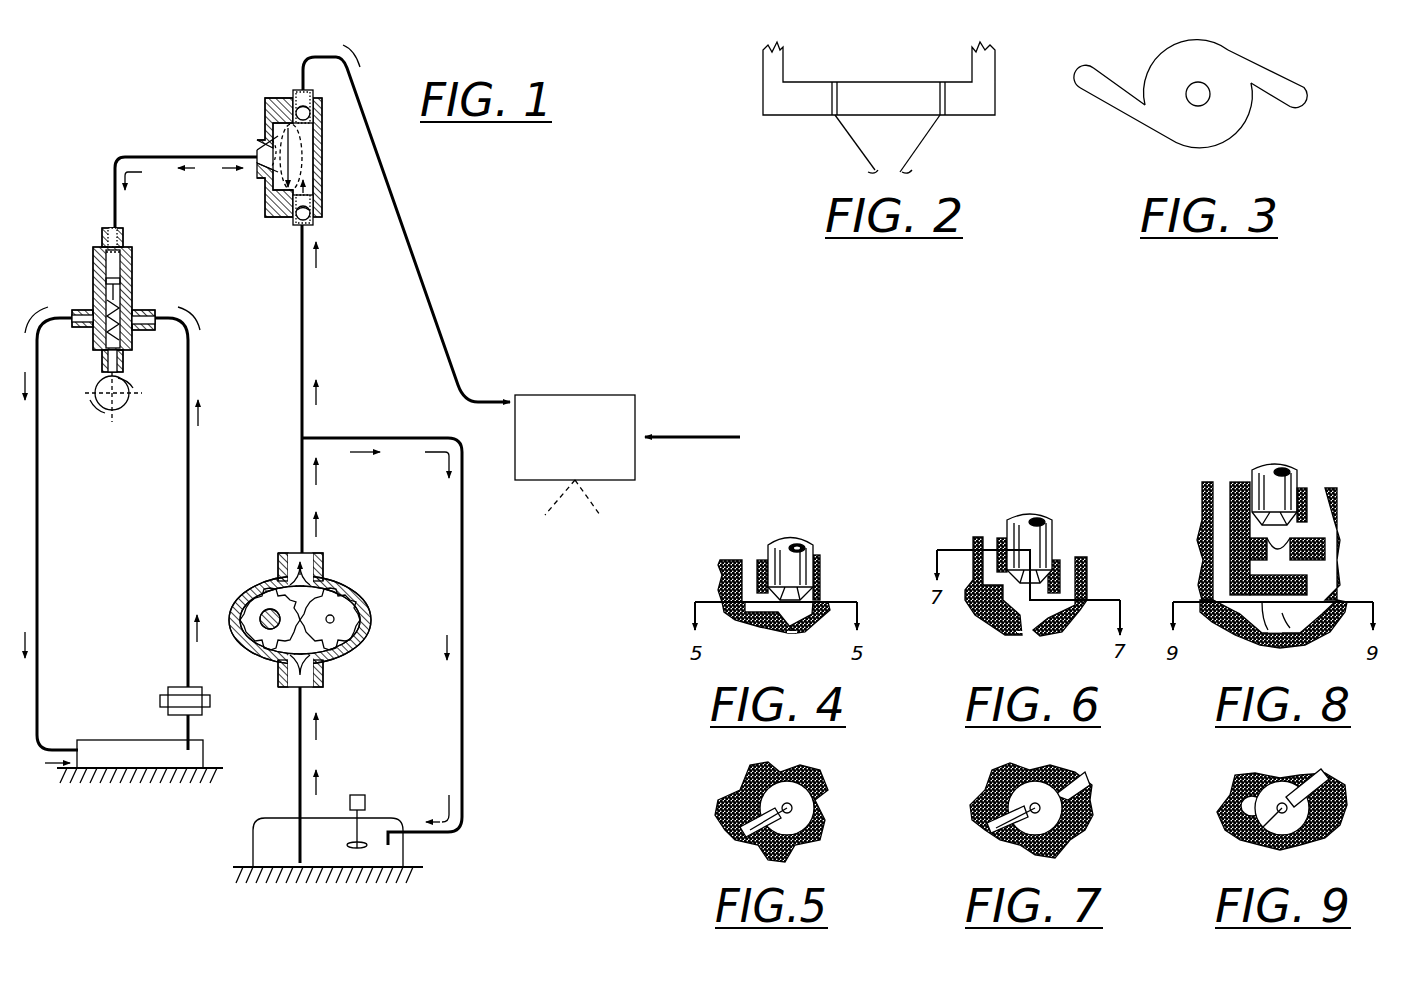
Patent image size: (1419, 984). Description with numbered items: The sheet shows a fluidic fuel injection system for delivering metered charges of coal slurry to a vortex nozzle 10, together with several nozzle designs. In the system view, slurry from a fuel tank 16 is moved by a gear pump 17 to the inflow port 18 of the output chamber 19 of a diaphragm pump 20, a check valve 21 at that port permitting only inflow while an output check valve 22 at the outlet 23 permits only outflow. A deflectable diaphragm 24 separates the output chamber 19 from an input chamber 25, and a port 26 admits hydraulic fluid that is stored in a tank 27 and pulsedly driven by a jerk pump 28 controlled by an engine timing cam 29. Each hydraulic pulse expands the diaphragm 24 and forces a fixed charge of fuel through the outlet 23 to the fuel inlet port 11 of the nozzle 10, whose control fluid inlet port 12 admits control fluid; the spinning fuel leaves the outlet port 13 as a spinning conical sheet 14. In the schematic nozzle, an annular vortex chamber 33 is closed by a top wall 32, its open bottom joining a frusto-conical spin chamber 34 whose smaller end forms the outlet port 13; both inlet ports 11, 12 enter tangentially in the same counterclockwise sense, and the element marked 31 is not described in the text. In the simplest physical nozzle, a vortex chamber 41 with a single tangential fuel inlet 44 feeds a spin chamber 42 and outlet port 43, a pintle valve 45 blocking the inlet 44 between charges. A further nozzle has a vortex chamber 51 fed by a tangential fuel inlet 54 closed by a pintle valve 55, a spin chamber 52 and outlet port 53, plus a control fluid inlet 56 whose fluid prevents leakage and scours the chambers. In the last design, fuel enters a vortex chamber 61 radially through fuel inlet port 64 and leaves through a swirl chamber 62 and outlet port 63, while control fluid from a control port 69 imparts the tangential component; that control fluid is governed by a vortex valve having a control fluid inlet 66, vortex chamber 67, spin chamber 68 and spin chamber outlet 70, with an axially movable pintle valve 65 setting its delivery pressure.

In FIG. 1, the vortex nozzle 10 is at (612, 395).
In FIG. 2, the vortex nozzle 10 is at (1018, 137).
In FIG. 3, the vortex nozzle 10 is at (1305, 138).
In FIG. 1, the fuel inlet port 11 is at (512, 400).
In FIG. 2, the fuel inlet port 11 is at (830, 102).
In FIG. 3, the fuel inlet port 11 is at (1124, 107).
In FIG. 1, the control fluid inlet port 12 is at (640, 436).
In FIG. 2, the control fluid inlet port 12 is at (945, 100).
In FIG. 3, the control fluid inlet port 12 is at (1268, 82).
In FIG. 1, the outlet port 13 is at (590, 480).
In FIG. 2, the outlet port 13 is at (870, 172).
In FIG. 3, the outlet port 13 is at (1207, 85).
In FIG. 1, the spinning conical sheet 14 is at (587, 520).
In FIG. 1, the fuel tank 16 is at (258, 846).
In FIG. 1, the gear pump 17 is at (362, 588).
In FIG. 1, the inflow port 18 is at (298, 228).
In FIG. 1, the output chamber 19 is at (316, 165).
In FIG. 1, the diaphragm pump 20 is at (322, 199).
In FIG. 1, the check valve 21 is at (320, 220).
In FIG. 1, the output check valve 22 is at (322, 123).
In FIG. 1, the outlet 23 is at (298, 86).
In FIG. 1, the deflectable diaphragm 24 is at (265, 128).
In FIG. 1, the input chamber 25 is at (265, 183).
In FIG. 1, the port 26 is at (257, 153).
In FIG. 1, the hydraulic fluid tank 27 is at (93, 742).
In FIG. 1, the jerk pump 28 is at (93, 262).
In FIG. 1, the engine timing cam 29 is at (118, 400).
In FIG. 3, the vortex chamber 31 is at (1235, 136).
In FIG. 2, the top wall 32 is at (850, 82).
In FIG. 2, the vortex chamber 33 is at (925, 105).
In FIG. 2, the spin chamber 34 is at (913, 147).
In FIG. 4, the vortex chamber 41 is at (818, 593).
In FIG. 4, the spin chamber 42 is at (780, 613).
In FIG. 5, the spin chamber 42 is at (813, 796).
In FIG. 4, the outlet port 43 is at (789, 632).
In FIG. 5, the outlet port 43 is at (745, 847).
In FIG. 4, the fuel inlet 44 is at (748, 572).
In FIG. 5, the fuel inlet 44 is at (742, 803).
In FIG. 4, the pintle valve 45 is at (798, 560).
In FIG. 6, the vortex chamber 51 is at (997, 617).
In FIG. 6, the spin chamber 52 is at (1042, 620).
In FIG. 7, the spin chamber 52 is at (996, 842).
In FIG. 6, the outlet port 53 is at (1020, 632).
In FIG. 7, the outlet port 53 is at (1078, 833).
In FIG. 6, the fuel inlet 54 is at (988, 542).
In FIG. 7, the fuel inlet 54 is at (980, 812).
In FIG. 6, the pintle valve 55 is at (1037, 538).
In FIG. 6, the control fluid inlet 56 is at (1068, 578).
In FIG. 7, the control fluid inlet 56 is at (1082, 798).
In FIG. 8, the vortex chamber 61 is at (1265, 635).
In FIG. 8, the swirl chamber 62 is at (1290, 634).
In FIG. 9, the swirl chamber 62 is at (1285, 785).
In FIG. 8, the outlet port 63 is at (1275, 635).
In FIG. 9, the outlet port 63 is at (1260, 830).
In FIG. 8, the fuel inlet port 64 is at (1222, 588).
In FIG. 9, the fuel inlet port 64 is at (1243, 808).
In FIG. 8, the pintle valve 65 is at (1290, 490).
In FIG. 8, the control fluid inlet 66 is at (1335, 500).
In FIG. 8, the vortex chamber 67 is at (1250, 531).
In FIG. 8, the spin chamber 68 is at (1270, 548).
In FIG. 8, the control port 69 is at (1300, 580).
In FIG. 9, the control port 69 is at (1325, 812).
In FIG. 8, the spin chamber outlet 70 is at (1300, 563).